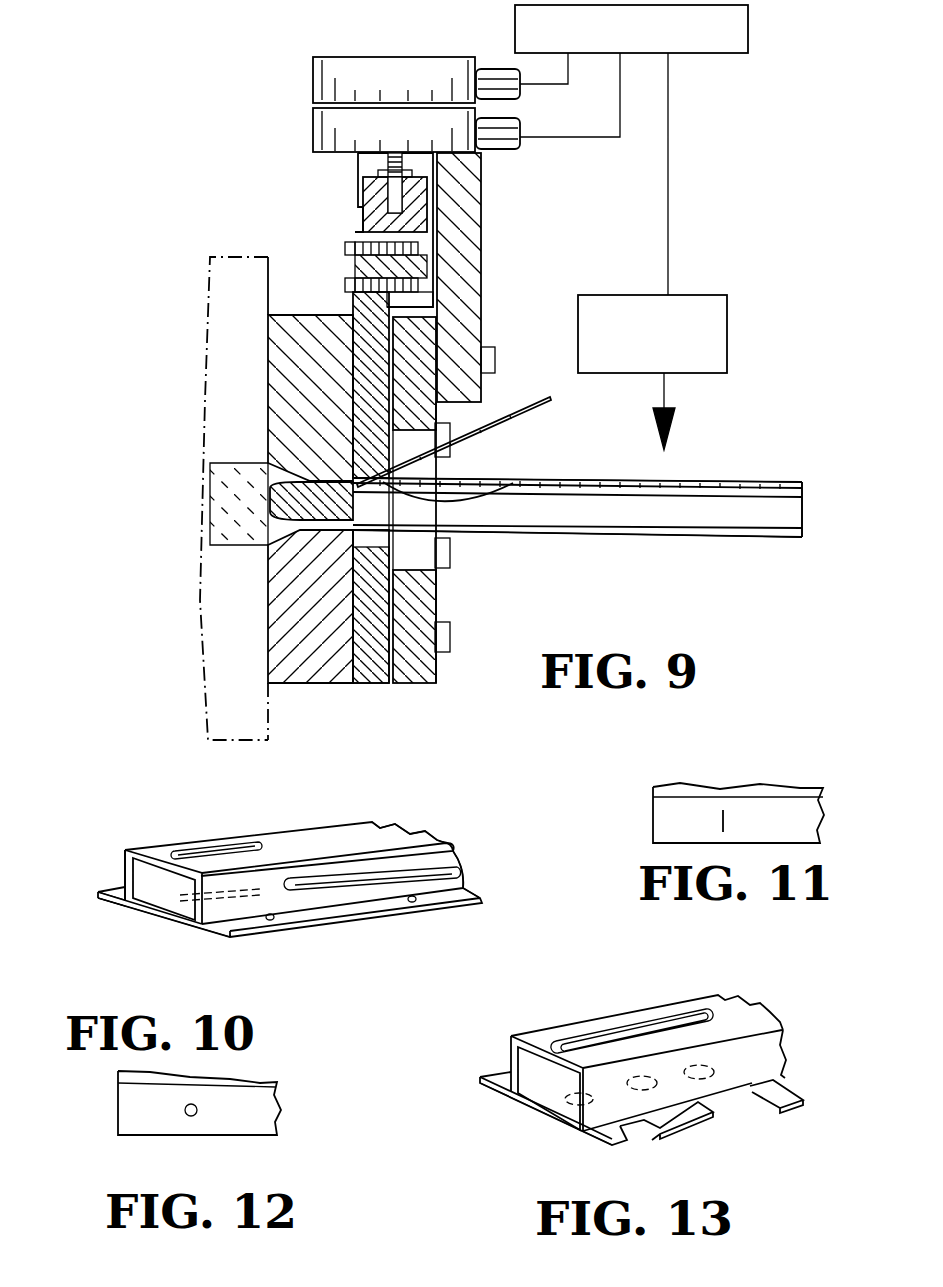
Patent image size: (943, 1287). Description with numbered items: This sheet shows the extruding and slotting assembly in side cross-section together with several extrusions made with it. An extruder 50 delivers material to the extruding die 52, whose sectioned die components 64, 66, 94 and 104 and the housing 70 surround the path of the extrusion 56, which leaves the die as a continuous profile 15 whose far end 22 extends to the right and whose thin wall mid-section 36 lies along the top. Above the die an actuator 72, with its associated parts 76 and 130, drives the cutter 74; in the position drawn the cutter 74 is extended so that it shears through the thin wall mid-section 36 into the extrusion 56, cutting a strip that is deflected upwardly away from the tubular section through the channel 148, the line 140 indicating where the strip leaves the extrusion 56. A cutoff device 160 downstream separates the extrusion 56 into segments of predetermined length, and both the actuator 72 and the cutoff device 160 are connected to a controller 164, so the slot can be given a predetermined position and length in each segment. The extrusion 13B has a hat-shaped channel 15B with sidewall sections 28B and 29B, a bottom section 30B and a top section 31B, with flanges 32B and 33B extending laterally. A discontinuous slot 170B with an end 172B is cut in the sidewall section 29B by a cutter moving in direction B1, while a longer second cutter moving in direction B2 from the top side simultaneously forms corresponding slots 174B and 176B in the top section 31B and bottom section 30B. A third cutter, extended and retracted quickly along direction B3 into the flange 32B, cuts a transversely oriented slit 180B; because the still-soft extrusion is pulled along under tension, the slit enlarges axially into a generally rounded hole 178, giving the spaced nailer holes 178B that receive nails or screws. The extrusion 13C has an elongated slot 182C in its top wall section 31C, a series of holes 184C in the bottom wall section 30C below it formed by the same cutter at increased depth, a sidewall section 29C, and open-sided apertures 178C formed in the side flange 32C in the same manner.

In FIG. 9, the actuator 72 is at (335, 57).
In FIG. 9, the adjustment screw 76 is at (387, 160).
In FIG. 9, the adjustable die block 130 is at (363, 220).
In FIG. 9, the cutter 74 is at (353, 307).
In FIG. 9, the die housing 70 is at (482, 202).
In FIG. 9, the controller 164 is at (748, 35).
In FIG. 9, the channel 148 is at (550, 398).
In FIG. 9, the cutoff device 160 is at (727, 337).
In FIG. 9, the thin wall mid-section 36 is at (627, 480).
In FIG. 9, the extruded strip 15 is at (770, 515).
In FIG. 9, the slit 140 is at (540, 462).
In FIG. 9, the die plate 94 is at (373, 540).
In FIG. 9, the die plate 104 is at (408, 558).
In FIG. 9, the extrusion 56 is at (645, 537).
In FIG. 9, the end of strip 22 is at (803, 528).
In FIG. 9, the extruding die 52 is at (312, 683).
In FIG. 9, the die plate 64 is at (372, 684).
In FIG. 9, the die plate 66 is at (415, 684).
In FIG. 9, the extruder 50 is at (240, 743).
In FIG. 10, the extrusion 13B is at (350, 805).
In FIG. 10, the direction B2 is at (217, 828).
In FIG. 10, the slot 174B is at (263, 850).
In FIG. 10, the hat-shaped channel 15B is at (428, 822).
In FIG. 11, the hat-shaped channel 15B is at (648, 785).
In FIG. 12, the hat-shaped channel 15B is at (333, 1062).
In FIG. 10, the sidewall section 29B is at (442, 848).
In FIG. 10, the discontinuous slot 170B is at (458, 860).
In FIG. 10, the top section 31B is at (165, 853).
In FIG. 10, the sidewall section 28B is at (125, 863).
In FIG. 10, the flange 33B is at (107, 903).
In FIG. 10, the bottom section 30B is at (150, 915).
In FIG. 10, the slot 176B is at (188, 907).
In FIG. 10, the flange 32B is at (217, 937).
In FIG. 11, the flange 32B is at (653, 832).
In FIG. 12, the flange 32B is at (257, 1120).
In FIG. 10, the nailer holes 178B is at (273, 920).
In FIG. 10, the end 172B is at (310, 890).
In FIG. 10, the direction B3 is at (360, 940).
In FIG. 10, the direction B1 is at (445, 928).
In FIG. 11, the transversely oriented slit 180B is at (727, 820).
In FIG. 12, the rounded hole 178 is at (190, 1117).
In FIG. 13, the elongated slot 182C is at (655, 1035).
In FIG. 13, the extrusion 13C is at (780, 998).
In FIG. 13, the top wall section 31C is at (542, 1037).
In FIG. 13, the side wall 29C is at (753, 1058).
In FIG. 13, the bottom wall section 30C is at (522, 1100).
In FIG. 13, the holes 184C is at (565, 1103).
In FIG. 13, the open-sided apertures 178C is at (638, 1132).
In FIG. 13, the side flange 32C is at (683, 1130).